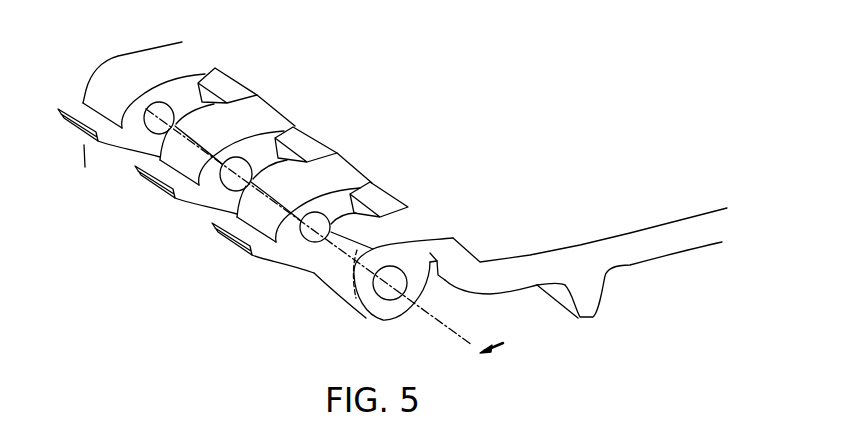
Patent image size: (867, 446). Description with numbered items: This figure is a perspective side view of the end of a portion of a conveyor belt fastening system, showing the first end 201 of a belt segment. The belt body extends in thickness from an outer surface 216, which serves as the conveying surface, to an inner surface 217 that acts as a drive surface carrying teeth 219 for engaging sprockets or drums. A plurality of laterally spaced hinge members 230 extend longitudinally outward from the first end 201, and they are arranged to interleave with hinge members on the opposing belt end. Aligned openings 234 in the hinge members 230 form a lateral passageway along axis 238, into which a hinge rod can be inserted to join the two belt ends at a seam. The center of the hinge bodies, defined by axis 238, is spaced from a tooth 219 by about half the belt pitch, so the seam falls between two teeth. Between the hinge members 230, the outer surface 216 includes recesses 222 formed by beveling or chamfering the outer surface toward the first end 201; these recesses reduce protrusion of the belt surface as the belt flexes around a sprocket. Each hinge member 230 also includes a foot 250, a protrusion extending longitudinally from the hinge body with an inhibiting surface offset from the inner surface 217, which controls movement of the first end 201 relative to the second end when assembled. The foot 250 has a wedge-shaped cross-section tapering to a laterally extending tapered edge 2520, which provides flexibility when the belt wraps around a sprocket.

The outer surface 216 is at (478, 139).
The recesses 222 is at (407, 208).
The hinge members 230 is at (256, 199).
The foot 250 is at (58, 110).
The tapered edge 2520 is at (137, 178).
The openings 234 is at (307, 241).
The axis 238 is at (455, 335).
The first end 201 is at (578, 268).
The inner surface 217 is at (573, 315).
The teeth 219 is at (595, 291).